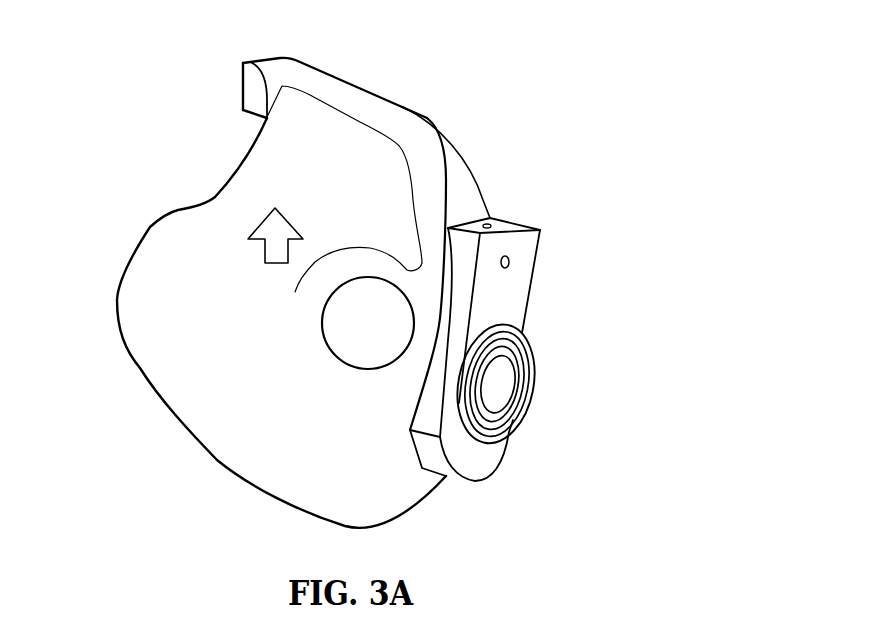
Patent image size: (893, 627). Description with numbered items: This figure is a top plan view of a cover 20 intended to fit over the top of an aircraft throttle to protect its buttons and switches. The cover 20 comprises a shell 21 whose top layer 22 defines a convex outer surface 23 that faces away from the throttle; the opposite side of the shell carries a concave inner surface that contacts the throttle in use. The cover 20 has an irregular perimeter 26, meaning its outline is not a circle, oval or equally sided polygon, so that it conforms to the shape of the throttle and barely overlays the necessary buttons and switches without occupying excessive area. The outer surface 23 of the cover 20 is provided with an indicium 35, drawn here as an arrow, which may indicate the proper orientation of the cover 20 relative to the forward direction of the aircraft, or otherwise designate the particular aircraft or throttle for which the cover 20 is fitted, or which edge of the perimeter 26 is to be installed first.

The cover 20 is at (303, 267).
The shell 21 is at (363, 125).
The top layer 22 is at (400, 147).
The outer surface 23 is at (475, 177).
The perimeter 26 is at (163, 402).
The indicia 35 is at (275, 230).